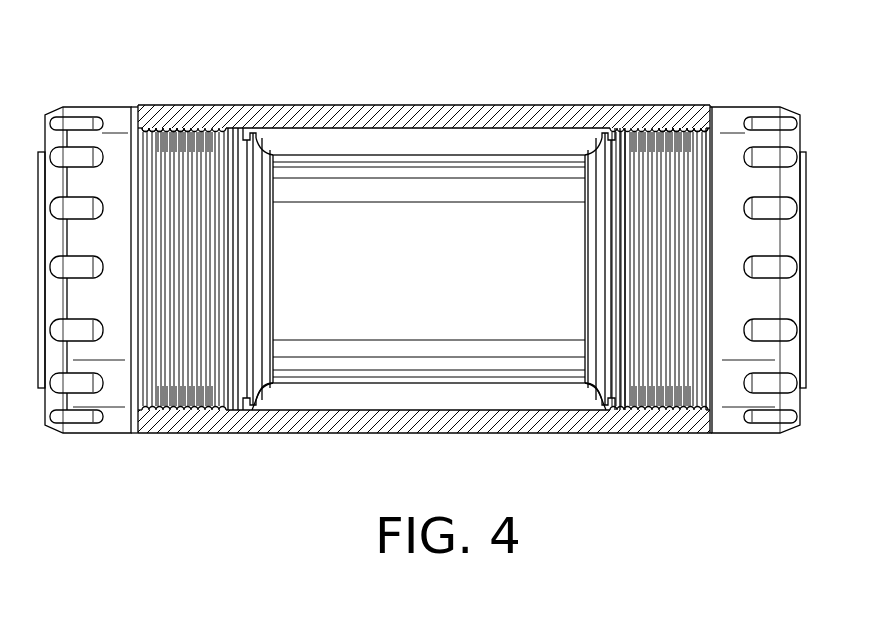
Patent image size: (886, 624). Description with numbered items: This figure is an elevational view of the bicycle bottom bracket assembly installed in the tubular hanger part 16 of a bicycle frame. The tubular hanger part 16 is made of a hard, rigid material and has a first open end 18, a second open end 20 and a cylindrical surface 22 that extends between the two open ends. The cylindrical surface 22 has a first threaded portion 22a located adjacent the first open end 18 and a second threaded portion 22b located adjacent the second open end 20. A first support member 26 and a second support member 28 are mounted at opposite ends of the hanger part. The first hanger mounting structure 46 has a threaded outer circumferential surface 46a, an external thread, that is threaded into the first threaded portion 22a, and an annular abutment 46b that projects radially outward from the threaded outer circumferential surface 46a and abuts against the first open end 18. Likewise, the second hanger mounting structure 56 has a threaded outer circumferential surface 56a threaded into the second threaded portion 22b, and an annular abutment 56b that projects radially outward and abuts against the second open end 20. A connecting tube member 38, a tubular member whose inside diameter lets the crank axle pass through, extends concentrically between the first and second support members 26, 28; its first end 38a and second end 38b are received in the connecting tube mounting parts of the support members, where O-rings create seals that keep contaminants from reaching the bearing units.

The tubular hanger part 16 is at (412, 103).
The first open end 18 is at (115, 107).
The second open end 20 is at (738, 110).
The cylindrical surface 22 is at (457, 120).
The first threaded portion 22a is at (232, 128).
The second threaded portion 22b is at (620, 128).
The first support member 26 is at (72, 103).
The second support member 28 is at (772, 103).
The connecting tube member 38 is at (431, 388).
The first end 38a is at (265, 405).
The second end 38b is at (590, 403).
The first hanger mounting structure 46 is at (183, 417).
The threaded outer circumferential surface 46a is at (182, 126).
The annular abutment 46b is at (152, 126).
The second hanger mounting structure 56 is at (659, 417).
The threaded outer circumferential surface 56a is at (668, 125).
The annular abutment 56b is at (698, 120).